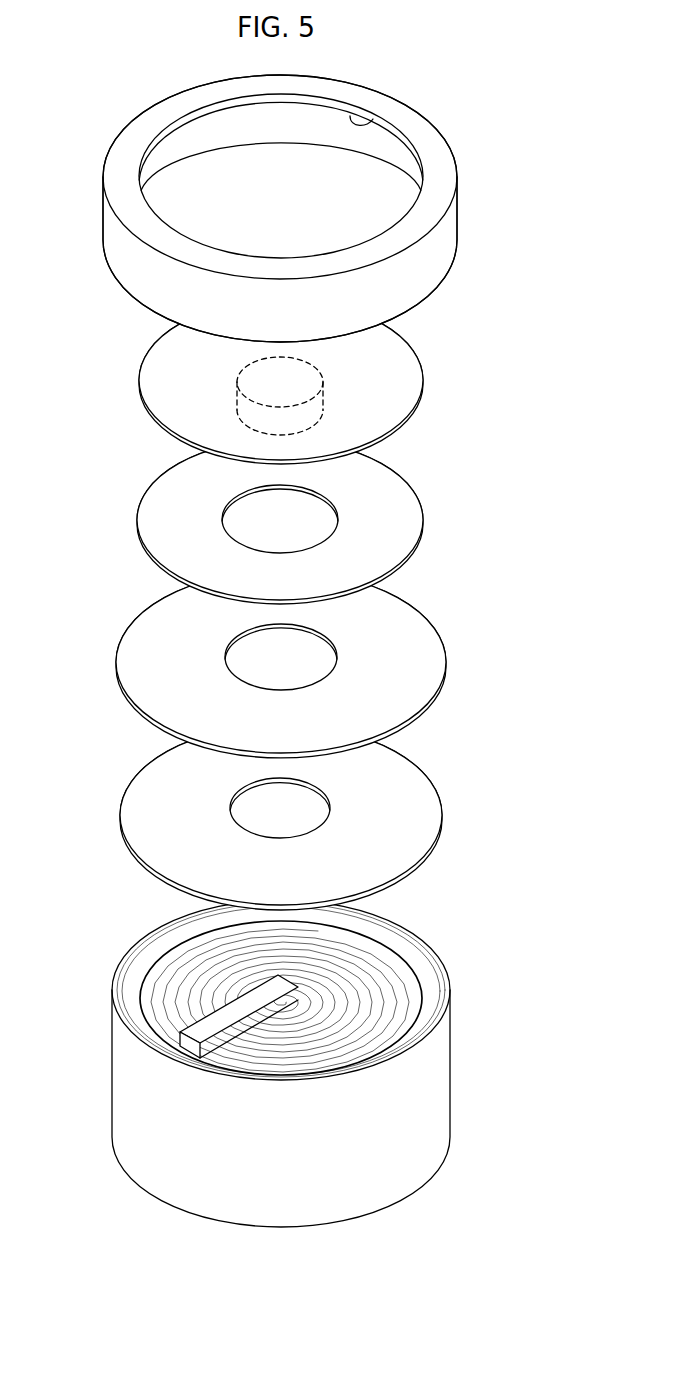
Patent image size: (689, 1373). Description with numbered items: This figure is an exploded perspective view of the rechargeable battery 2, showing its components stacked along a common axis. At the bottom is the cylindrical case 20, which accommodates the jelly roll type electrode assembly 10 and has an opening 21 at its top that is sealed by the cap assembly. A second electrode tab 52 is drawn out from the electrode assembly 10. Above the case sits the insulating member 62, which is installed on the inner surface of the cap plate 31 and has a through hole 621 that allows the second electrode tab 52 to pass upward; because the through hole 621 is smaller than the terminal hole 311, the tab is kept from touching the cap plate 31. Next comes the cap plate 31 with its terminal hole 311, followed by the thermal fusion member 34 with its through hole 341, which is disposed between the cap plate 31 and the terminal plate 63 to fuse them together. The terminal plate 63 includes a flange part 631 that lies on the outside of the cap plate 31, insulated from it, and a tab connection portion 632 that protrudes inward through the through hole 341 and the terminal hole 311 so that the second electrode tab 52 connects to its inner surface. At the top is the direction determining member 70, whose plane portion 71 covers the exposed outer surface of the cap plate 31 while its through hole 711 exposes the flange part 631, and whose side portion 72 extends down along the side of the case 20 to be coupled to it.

The rechargeable battery 2 is at (103, 90).
The electrode assembly 10 is at (253, 977).
The case 20 is at (283, 1046).
The opening 21 is at (167, 914).
The second electrode tab 52 is at (210, 1024).
The insulating member 62 is at (300, 817).
The through hole 621 is at (235, 815).
The cap plate 31 is at (301, 664).
The terminal hole 311 is at (236, 664).
The thermal fusion member 34 is at (293, 522).
The through hole 341 is at (233, 527).
The terminal plate 63 is at (332, 382).
The flange part 631 is at (410, 372).
The tab connection portion 632 is at (317, 382).
The direction determining member 70 is at (327, 189).
The plane portion 71 is at (448, 160).
The through hole 711 is at (352, 116).
The side portion 72 is at (448, 232).